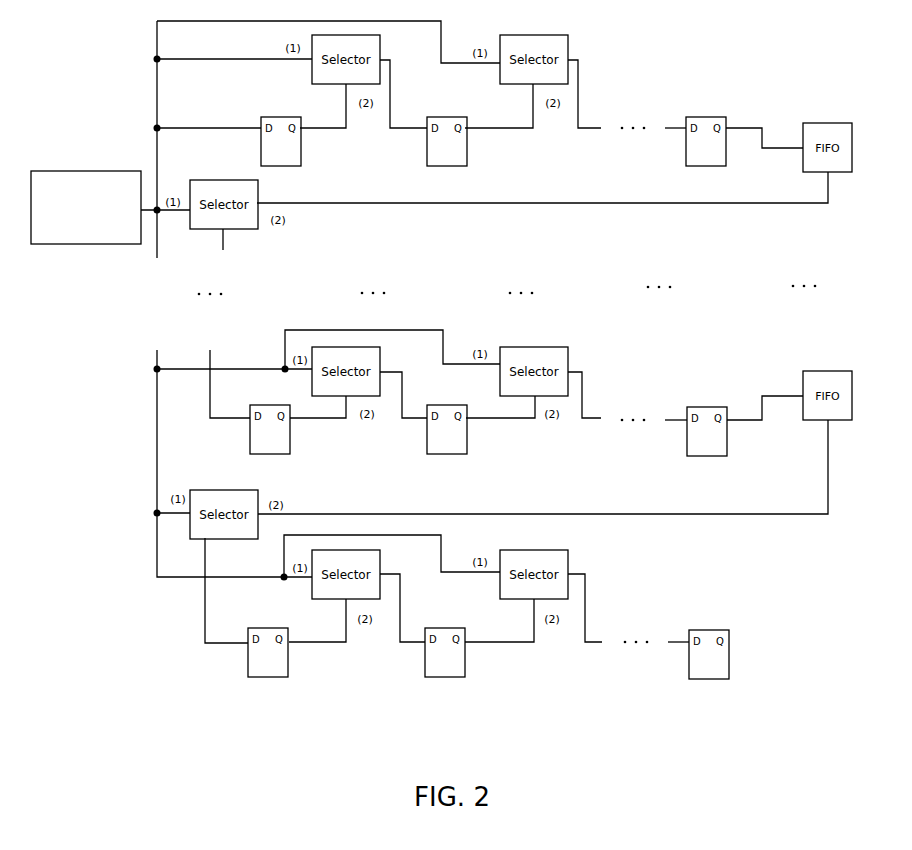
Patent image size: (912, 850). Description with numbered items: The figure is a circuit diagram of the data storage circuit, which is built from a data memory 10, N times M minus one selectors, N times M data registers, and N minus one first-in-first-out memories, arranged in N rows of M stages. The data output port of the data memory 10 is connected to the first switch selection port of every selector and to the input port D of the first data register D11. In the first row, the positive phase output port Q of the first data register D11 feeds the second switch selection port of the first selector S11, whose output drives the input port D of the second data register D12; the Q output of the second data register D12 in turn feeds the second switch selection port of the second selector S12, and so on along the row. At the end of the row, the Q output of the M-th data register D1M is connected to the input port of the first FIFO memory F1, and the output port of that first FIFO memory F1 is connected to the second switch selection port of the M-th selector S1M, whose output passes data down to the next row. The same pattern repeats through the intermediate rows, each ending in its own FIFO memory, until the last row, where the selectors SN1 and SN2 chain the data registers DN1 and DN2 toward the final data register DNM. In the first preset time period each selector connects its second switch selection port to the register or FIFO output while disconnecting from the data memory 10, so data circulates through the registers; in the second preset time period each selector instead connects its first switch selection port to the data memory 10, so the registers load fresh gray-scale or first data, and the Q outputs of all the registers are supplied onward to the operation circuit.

The data memory 10 is at (57, 170).
The first selector S11 is at (346, 73).
The second selector S12 is at (533, 73).
The M-th selector S1M is at (221, 218).
The first data register D11 is at (281, 153).
The second data register D12 is at (447, 153).
The M-th data register D1M is at (706, 154).
The first FIFO memory F1 is at (823, 157).
The ((N−1)*M+1)-th selector SN1 is at (319, 580).
The ((N−1)*M+2)-th selector SN2 is at (506, 578).
The ((N−1)*M+1)-th data register DN1 is at (268, 666).
The ((N−1)*M+2)-th data register DN2 is at (445, 666).
The N*M-th data register DNM is at (709, 669).